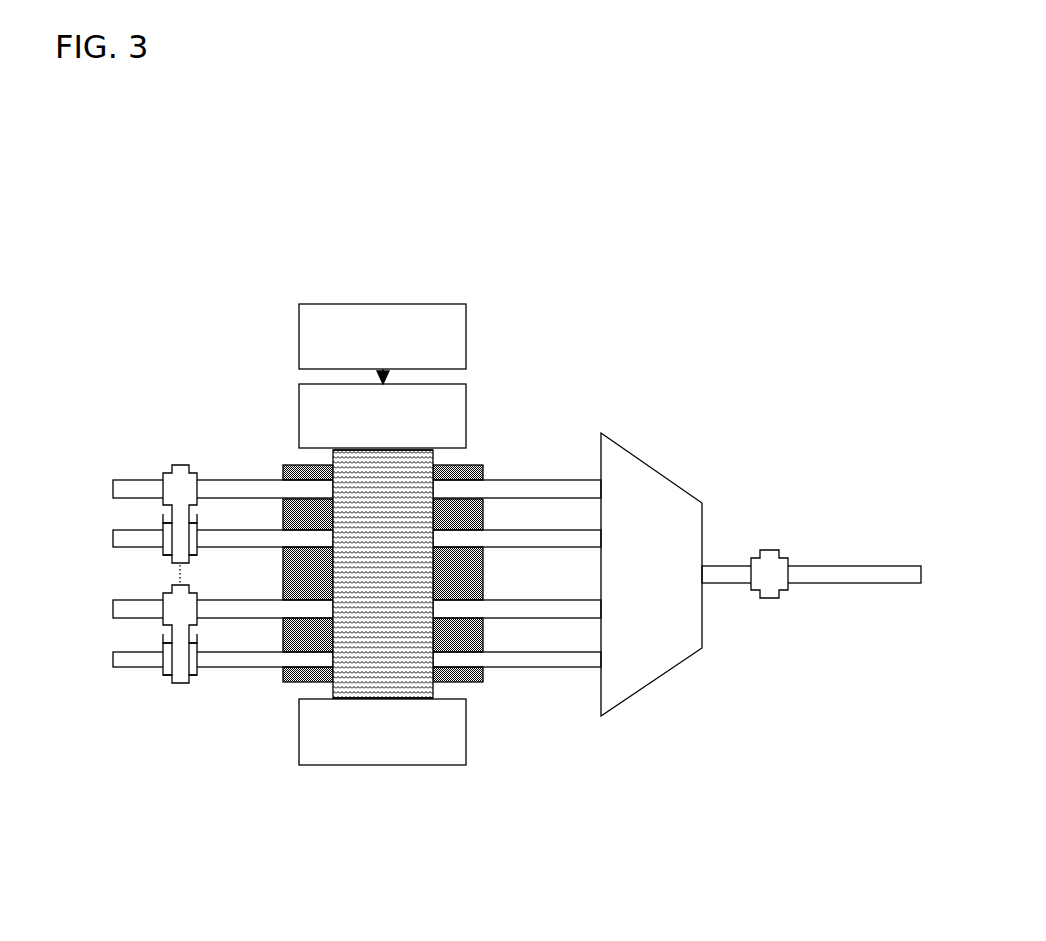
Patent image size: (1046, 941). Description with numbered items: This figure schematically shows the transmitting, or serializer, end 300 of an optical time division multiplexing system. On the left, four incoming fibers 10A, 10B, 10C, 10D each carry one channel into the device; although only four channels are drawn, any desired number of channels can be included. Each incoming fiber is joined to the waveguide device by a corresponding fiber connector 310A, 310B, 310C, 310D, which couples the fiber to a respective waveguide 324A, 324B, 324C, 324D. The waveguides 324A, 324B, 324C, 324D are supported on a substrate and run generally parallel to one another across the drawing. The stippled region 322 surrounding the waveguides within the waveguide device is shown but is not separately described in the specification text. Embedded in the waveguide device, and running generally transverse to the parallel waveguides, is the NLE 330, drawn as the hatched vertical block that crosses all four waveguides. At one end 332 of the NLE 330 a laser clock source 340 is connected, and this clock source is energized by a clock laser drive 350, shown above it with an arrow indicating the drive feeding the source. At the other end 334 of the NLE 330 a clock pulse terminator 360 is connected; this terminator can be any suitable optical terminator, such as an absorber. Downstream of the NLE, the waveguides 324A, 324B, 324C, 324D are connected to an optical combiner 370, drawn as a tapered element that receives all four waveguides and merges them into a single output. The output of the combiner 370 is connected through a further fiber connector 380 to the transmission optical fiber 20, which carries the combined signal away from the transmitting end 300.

The transmitting end 300 is at (727, 825).
The incoming fiber 10A is at (113, 489).
The incoming fiber 10B is at (113, 537).
The incoming fiber 10C is at (113, 608).
The incoming fiber 10D is at (113, 659).
The fiber connector 310A is at (190, 472).
The fiber connector 310B is at (191, 522).
The fiber connector 310C is at (191, 594).
The fiber connector 310D is at (191, 643).
The cladding 322 is at (478, 686).
The waveguide 324A is at (498, 500).
The waveguide 324B is at (498, 548).
The waveguide 324C is at (498, 619).
The waveguide 324D is at (498, 668).
The NLE 330 is at (336, 582).
The end of the NLE 332 is at (333, 461).
The other end of the NLE 334 is at (333, 690).
The laser clock source 340 is at (466, 410).
The clock laser drive 350 is at (466, 336).
The clock pulse terminator 360 is at (466, 755).
The optical combiner 370 is at (668, 670).
The fiber connector 380 is at (772, 550).
The transmission optical fiber 20 is at (900, 532).